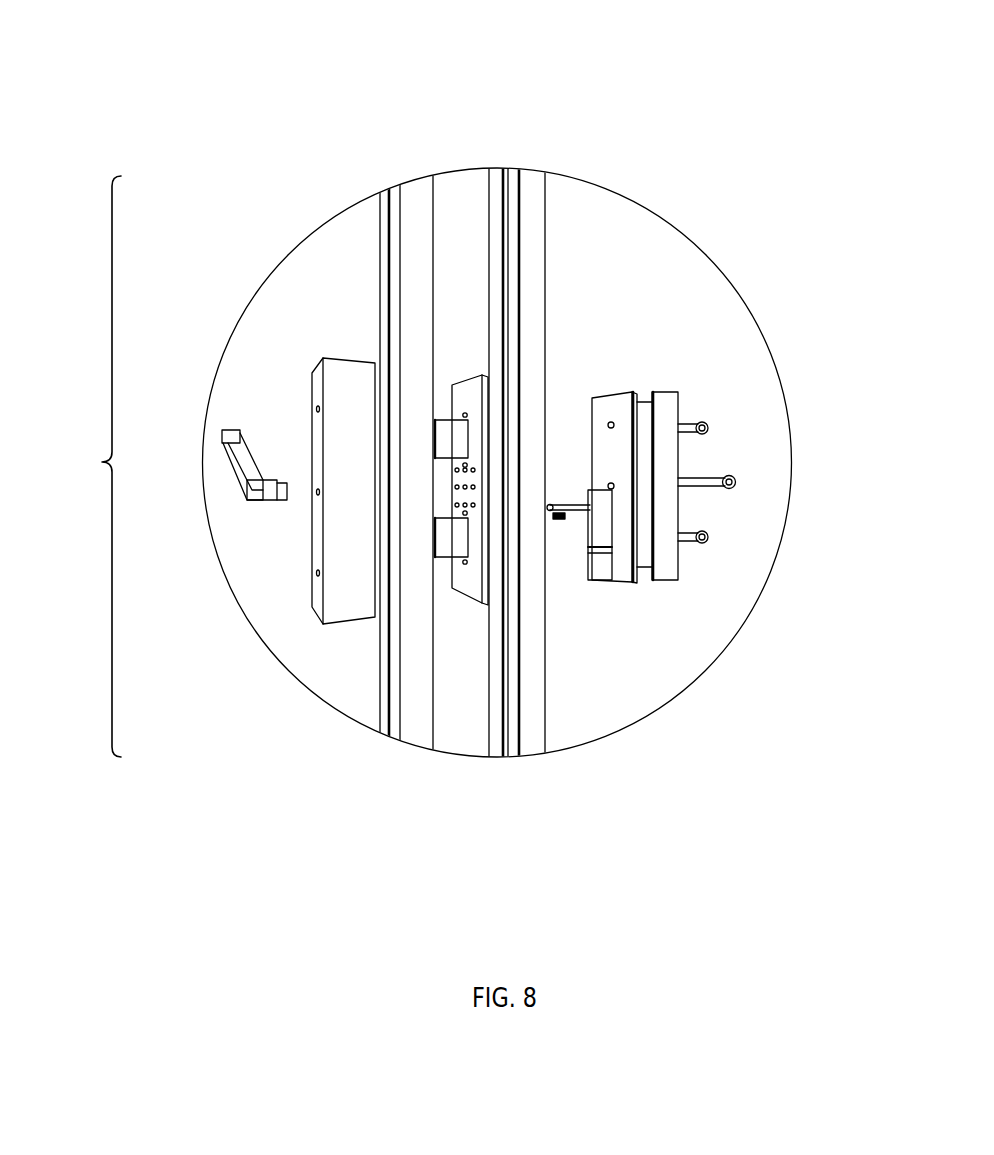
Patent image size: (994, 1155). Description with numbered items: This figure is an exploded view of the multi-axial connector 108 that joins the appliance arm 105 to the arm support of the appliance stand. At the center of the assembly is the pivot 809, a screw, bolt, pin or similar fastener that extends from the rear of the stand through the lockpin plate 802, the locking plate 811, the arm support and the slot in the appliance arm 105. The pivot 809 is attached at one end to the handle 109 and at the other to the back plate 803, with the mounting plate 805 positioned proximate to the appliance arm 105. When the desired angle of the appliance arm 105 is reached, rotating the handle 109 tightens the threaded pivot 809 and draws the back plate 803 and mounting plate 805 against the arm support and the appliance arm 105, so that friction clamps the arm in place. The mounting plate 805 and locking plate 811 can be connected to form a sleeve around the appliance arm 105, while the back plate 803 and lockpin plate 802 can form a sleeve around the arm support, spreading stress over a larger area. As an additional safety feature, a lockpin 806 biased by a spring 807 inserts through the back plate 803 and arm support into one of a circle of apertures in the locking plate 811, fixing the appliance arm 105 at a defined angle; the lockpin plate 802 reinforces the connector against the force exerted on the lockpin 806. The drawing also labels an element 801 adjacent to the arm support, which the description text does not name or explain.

The appliance arm 105 is at (351, 784).
The multi-axial connector 108 is at (77, 466).
The handle 109 is at (301, 274).
The rail 801 is at (688, 254).
The lockpin plate 802 is at (654, 448).
The back plate 803 is at (693, 666).
The mounting plate 805 is at (402, 365).
The lockpin 806 is at (626, 649).
The spring 807 is at (595, 677).
The pivot 809 is at (744, 560).
The locking plate 811 is at (500, 649).